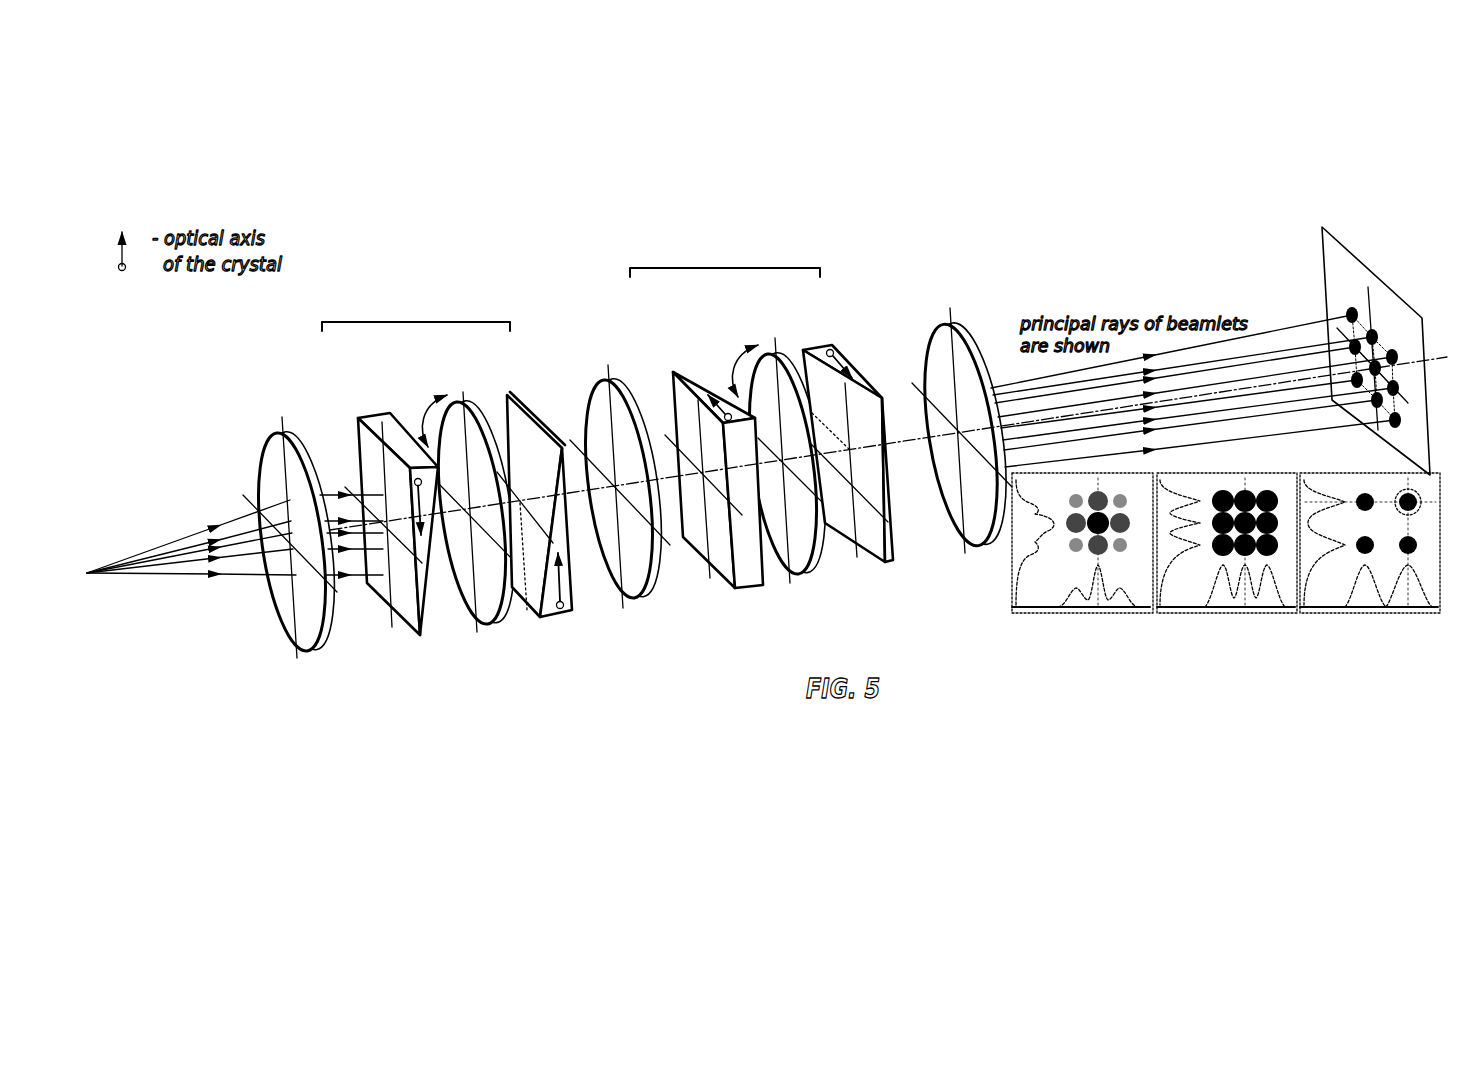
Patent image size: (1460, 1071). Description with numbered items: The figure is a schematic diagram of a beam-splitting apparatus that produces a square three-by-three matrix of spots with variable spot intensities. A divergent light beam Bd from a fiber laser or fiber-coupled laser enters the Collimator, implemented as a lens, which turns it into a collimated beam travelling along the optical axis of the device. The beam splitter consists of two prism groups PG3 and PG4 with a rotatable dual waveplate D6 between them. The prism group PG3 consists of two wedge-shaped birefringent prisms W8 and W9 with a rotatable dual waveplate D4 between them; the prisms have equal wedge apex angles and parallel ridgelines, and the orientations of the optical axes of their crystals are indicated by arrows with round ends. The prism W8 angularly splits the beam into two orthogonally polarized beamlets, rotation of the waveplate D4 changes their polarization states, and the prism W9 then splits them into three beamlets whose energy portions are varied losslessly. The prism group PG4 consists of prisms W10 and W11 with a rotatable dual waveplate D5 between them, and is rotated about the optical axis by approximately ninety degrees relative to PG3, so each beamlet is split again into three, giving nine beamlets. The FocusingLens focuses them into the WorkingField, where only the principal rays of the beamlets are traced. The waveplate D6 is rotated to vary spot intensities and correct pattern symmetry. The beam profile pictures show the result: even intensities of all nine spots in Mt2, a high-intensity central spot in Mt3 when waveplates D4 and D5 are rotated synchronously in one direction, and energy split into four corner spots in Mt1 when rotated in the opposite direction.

The collimator Collimator is at (258, 457).
The divergent light beam Bd is at (235, 535).
The prism group PG3 is at (416, 311).
The wedge-shaped birefringent prism W8 is at (372, 413).
The rotatable dual waveplate D4 is at (457, 403).
The wedge-shaped birefringent prism W9 is at (505, 398).
The rotatable dual waveplate D6 is at (603, 380).
The prism group PG4 is at (725, 258).
The wedge-shaped birefringent prism W10 is at (673, 372).
The rotatable dual waveplate D5 is at (768, 353).
The wedge-shaped birefringent prism W11 is at (820, 348).
The focusing lens FocusingLens is at (965, 332).
The working field WorkingField is at (1322, 263).
The 3×3 matrix multi-spot pattern Mt3 is at (1082, 564).
The 3×3 matrix multi-spot pattern Mt2 is at (1227, 564).
The 3×3 matrix multi-spot pattern Mt1 is at (1370, 564).